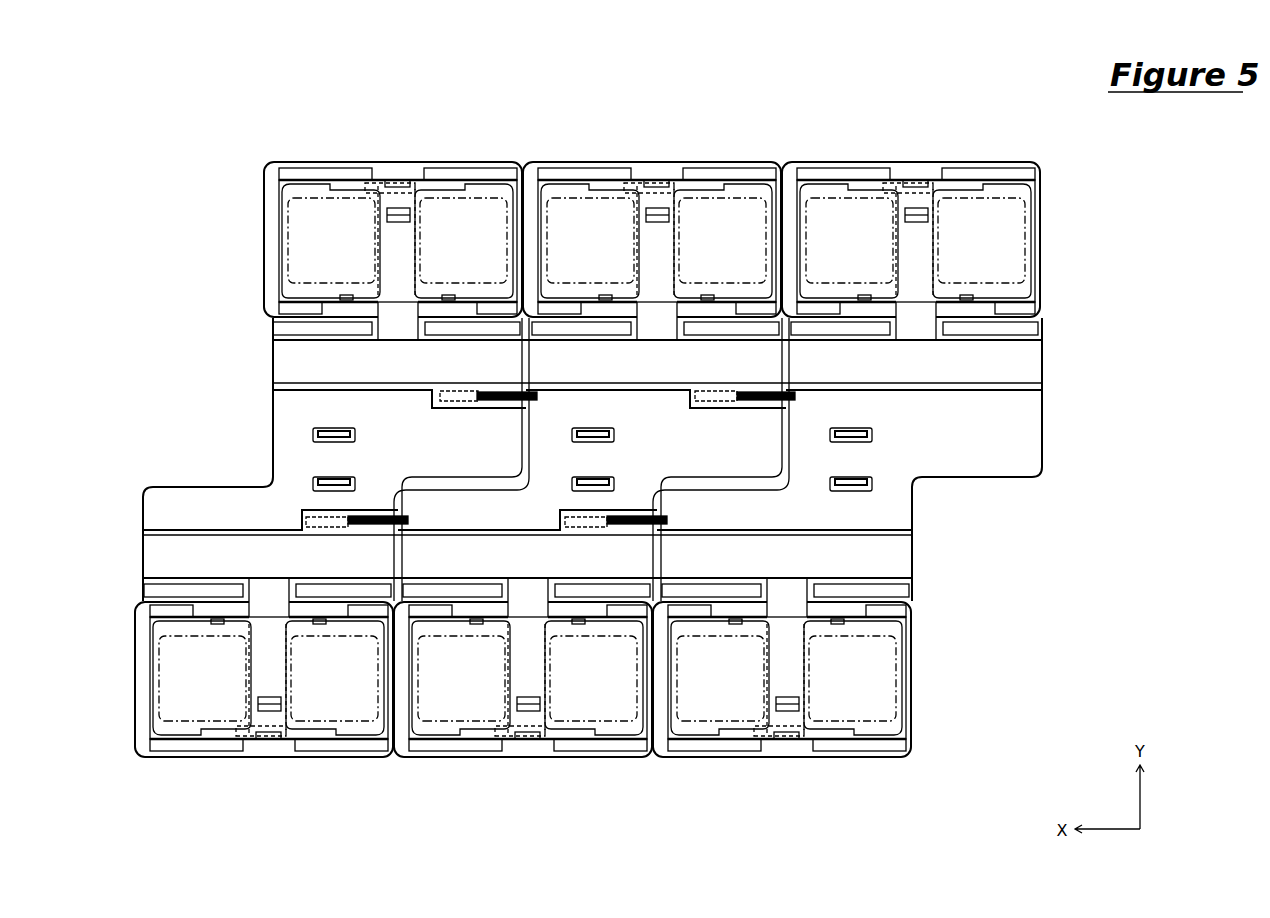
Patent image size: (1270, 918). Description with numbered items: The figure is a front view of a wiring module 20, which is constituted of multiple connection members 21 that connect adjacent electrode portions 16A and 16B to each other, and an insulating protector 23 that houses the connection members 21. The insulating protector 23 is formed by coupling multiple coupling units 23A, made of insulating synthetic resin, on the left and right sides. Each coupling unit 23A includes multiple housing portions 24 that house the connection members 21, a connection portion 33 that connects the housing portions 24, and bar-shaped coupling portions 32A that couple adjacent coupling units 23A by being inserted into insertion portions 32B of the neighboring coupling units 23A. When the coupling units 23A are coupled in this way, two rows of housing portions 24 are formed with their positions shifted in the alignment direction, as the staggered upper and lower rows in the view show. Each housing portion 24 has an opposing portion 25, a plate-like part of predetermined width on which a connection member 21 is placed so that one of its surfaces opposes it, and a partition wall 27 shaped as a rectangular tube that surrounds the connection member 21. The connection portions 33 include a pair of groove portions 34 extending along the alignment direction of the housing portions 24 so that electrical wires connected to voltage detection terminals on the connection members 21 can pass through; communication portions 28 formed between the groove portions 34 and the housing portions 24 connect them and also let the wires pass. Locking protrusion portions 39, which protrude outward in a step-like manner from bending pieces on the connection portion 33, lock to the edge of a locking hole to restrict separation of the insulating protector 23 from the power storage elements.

The electrode portion 16A is at (472, 200).
The electrode portion 16B is at (345, 198).
The wiring module 20 is at (1019, 126).
The connection member 21 is at (375, 183).
The insulating protector 23 is at (1079, 377).
The coupling unit 23A is at (412, 144).
The housing portion 24 is at (358, 162).
The opposing portion 25 is at (350, 290).
The partition wall 27 is at (293, 162).
The communication portion 28 is at (417, 325).
The coupling portion 32A is at (487, 392).
The insertion portion 32B is at (433, 390).
The connection portion 33 is at (307, 410).
The groove portion 34 is at (292, 340).
The locking protrusion portion 39 is at (313, 435).